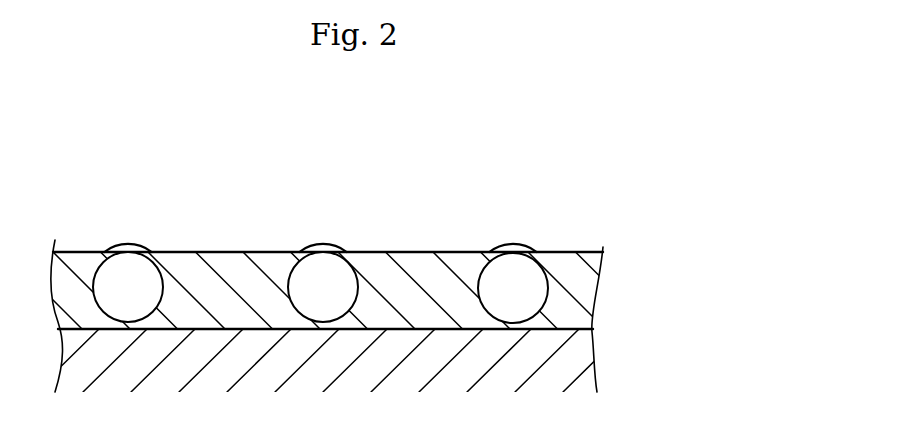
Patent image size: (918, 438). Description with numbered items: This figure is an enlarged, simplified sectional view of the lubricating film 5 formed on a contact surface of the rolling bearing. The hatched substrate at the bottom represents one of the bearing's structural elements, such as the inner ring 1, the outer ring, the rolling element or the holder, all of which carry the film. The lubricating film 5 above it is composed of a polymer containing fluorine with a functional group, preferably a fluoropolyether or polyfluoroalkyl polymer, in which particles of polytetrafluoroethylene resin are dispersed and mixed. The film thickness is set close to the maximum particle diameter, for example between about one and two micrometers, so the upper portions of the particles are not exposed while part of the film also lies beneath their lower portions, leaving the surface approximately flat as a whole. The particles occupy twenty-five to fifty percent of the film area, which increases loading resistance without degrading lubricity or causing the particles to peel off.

The inner ring 1 is at (578, 361).
The lubricating film 5 is at (410, 251).